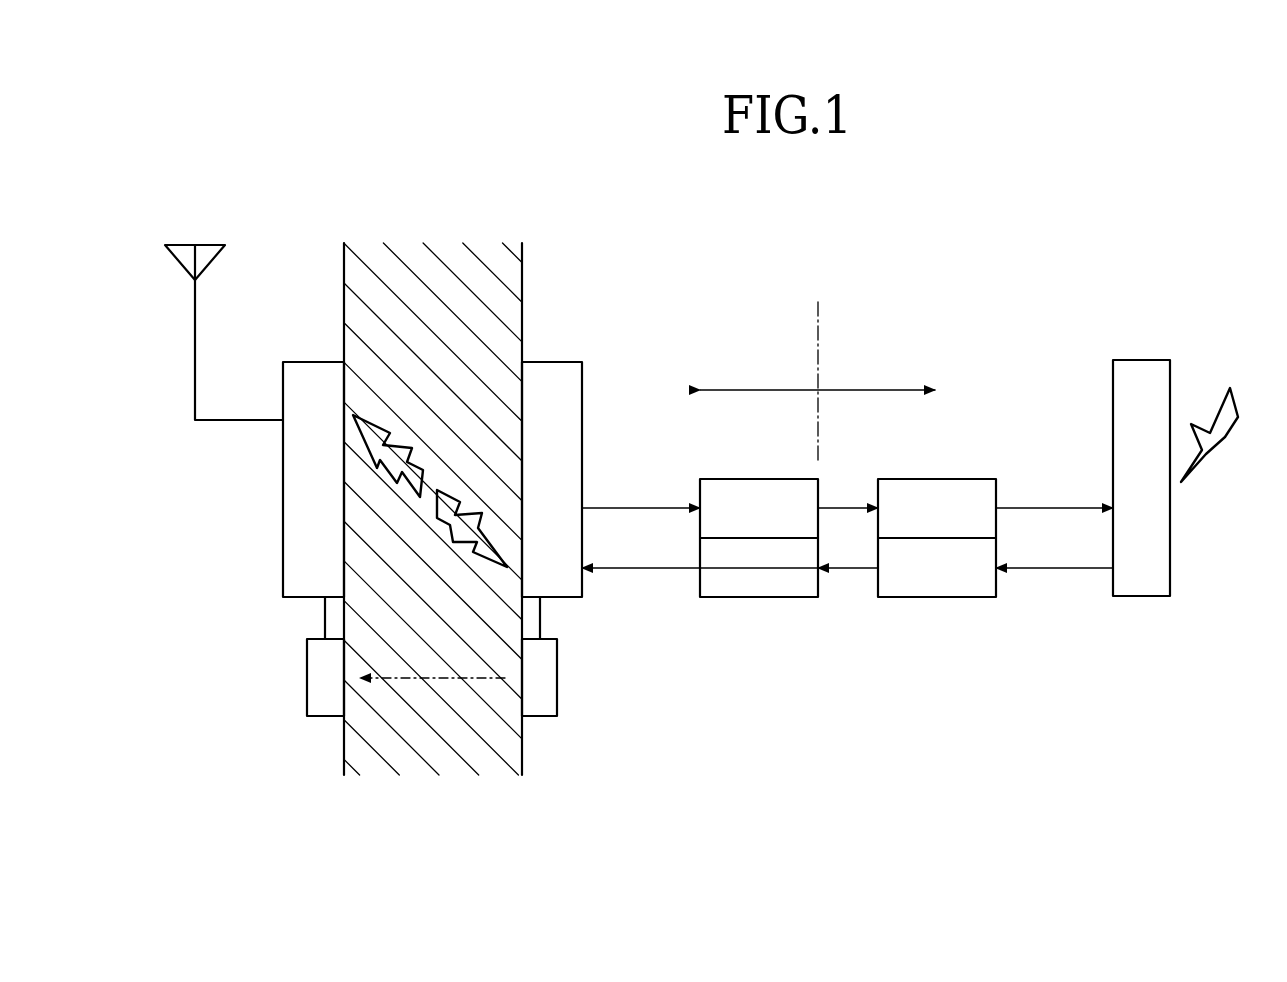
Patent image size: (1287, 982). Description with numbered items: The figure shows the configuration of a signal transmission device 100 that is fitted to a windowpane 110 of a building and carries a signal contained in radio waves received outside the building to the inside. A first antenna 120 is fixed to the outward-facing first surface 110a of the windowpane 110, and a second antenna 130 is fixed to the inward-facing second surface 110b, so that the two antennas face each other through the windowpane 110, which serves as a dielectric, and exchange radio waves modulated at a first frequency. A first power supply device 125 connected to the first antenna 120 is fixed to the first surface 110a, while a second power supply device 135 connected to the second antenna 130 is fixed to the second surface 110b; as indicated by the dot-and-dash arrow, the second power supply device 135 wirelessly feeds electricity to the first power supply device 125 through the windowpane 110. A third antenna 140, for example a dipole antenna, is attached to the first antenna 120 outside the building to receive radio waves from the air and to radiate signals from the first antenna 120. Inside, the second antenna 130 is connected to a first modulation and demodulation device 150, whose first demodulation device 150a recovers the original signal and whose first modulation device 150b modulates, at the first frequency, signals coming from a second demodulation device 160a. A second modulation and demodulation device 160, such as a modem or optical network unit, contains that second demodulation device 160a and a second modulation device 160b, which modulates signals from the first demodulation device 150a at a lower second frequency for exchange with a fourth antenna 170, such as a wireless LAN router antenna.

The signal transmission device 100 is at (1163, 198).
The windowpane 110 is at (434, 252).
The first surface 110a is at (344, 268).
The second surface 110b is at (522, 267).
The first antenna 120 is at (302, 368).
The first power supply device 125 is at (318, 686).
The second antenna 130 is at (562, 368).
The second power supply device 135 is at (548, 688).
The third antenna 140 is at (183, 247).
The first modulation and demodulation device 150 is at (703, 466).
The first demodulation device 150a is at (771, 488).
The first modulation device 150b is at (755, 590).
The second modulation and demodulation device 160 is at (972, 467).
The second demodulation device 160a is at (910, 588).
The second modulation device 160b is at (899, 488).
The fourth antenna 170 is at (1133, 363).